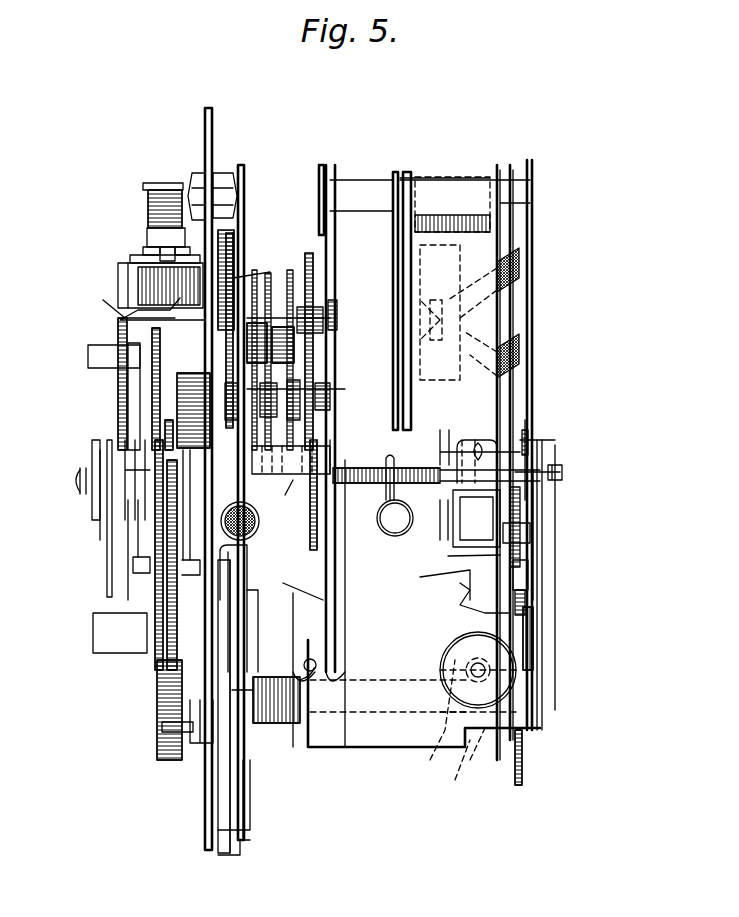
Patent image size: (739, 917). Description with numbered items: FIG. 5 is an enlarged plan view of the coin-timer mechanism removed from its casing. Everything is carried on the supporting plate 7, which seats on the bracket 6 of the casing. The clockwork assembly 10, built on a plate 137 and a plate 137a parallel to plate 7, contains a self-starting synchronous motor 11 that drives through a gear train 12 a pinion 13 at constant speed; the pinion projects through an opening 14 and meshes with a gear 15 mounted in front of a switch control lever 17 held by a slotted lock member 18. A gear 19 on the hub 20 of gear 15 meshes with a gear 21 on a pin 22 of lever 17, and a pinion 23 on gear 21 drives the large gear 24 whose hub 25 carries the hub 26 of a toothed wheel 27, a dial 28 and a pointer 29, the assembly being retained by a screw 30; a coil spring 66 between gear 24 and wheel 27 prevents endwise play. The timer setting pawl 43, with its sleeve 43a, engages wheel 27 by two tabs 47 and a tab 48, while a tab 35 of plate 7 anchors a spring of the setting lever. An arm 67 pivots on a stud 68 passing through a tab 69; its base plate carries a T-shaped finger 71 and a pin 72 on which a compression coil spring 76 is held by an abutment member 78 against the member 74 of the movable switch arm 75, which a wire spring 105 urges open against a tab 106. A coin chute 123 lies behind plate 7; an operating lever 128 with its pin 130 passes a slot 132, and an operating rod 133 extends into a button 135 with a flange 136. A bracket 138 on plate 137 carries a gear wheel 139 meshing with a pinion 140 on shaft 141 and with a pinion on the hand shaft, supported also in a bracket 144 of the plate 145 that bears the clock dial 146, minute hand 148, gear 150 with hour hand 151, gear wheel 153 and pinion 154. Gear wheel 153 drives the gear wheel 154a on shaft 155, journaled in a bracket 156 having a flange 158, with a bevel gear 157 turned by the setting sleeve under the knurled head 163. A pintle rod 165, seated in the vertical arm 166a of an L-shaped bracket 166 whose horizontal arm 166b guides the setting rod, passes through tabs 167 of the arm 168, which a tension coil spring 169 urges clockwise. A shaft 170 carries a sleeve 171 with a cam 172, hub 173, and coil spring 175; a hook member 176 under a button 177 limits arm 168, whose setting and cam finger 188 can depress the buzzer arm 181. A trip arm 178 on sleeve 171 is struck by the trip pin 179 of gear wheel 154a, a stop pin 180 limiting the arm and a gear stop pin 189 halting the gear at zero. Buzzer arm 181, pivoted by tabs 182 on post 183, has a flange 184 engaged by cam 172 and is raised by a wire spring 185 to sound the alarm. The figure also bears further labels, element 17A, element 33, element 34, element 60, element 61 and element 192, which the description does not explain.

The bracket 6 is at (297, 790).
The supporting plate 7 is at (204, 125).
The clockwork assembly 10 is at (375, 168).
The self-starting synchronous motor 11 is at (338, 190).
The gear train 12 is at (171, 870).
The pinion 13 is at (337, 870).
The opening 14 is at (213, 368).
The gear 15 is at (193, 517).
The switch control lever 17 is at (175, 705).
The pawl 17A is at (480, 443).
The slotted lock member 18 is at (247, 556).
The gear 19 is at (170, 420).
The hub 20 is at (250, 505).
The gear 21 is at (170, 690).
The pin 22 is at (165, 675).
The pinion 23 is at (140, 660).
The gear 24 is at (129, 299).
The hub 25 is at (98, 500).
The hub 26 is at (112, 440).
The toothed wheel 27 is at (118, 382).
The dial 28 is at (107, 548).
The pointer 29 is at (80, 475).
The screw 30 is at (80, 485).
The shaft 33 is at (175, 765).
The bracket 34 is at (200, 745).
The tab 35 is at (165, 735).
The timer setting pawl 43 is at (140, 690).
The sleeve 43a is at (150, 590).
The tabs 47 is at (100, 640).
The tab 48 is at (88, 352).
The bracket 60 is at (133, 562).
The rod 61 is at (128, 580).
The coil spring 66 is at (92, 462).
The arm 67 is at (248, 330).
The stud 68 is at (118, 275).
The tab 69 is at (130, 259).
The T-shaped finger 71 is at (150, 235).
The pin 72 is at (168, 183).
The member 74 is at (143, 250).
The movable switch arm 75 is at (238, 225).
The compression coil spring 76 is at (150, 215).
The abutment member 78 is at (152, 190).
The wire spring 105 is at (162, 308).
The tab 106 is at (272, 270).
The coin chute 123 is at (200, 743).
The operating lever 128 is at (300, 492).
The pin 130 is at (248, 652).
The slot 132 is at (247, 598).
The operating rod 133 is at (258, 515).
The button 135 is at (285, 583).
The flange 136 is at (255, 526).
The plate 137 is at (245, 168).
The plate 137a is at (337, 268).
The bracket 138 is at (215, 595).
The gear wheel 139 is at (238, 585).
The pinion 140 is at (313, 370).
The shaft 141 is at (300, 392).
The bracket 144 is at (562, 472).
The plate 145 is at (530, 335).
The clock dial 146 is at (533, 360).
The minute hand 148 is at (555, 575).
The gear 150 is at (528, 420).
The hour hand 151 is at (520, 500).
The gear wheel 153 is at (520, 488).
The pinion 154 is at (540, 515).
The gear wheel 154a is at (525, 600).
The shaft 155 is at (440, 662).
The bracket 156 is at (415, 600).
The bevel gear 157 is at (488, 744).
The flange 158 is at (462, 764).
The knurled head 163 is at (455, 645).
The pintle rod 165 is at (375, 720).
The L-shaped bracket 166 is at (533, 632).
The vertical arm 166a is at (530, 605).
The horizontal arm 166b is at (533, 680).
The tabs 167 is at (338, 700).
The arm 168 is at (355, 630).
The tension coil spring 169 is at (270, 725).
The shaft 170 is at (355, 445).
The sleeve 171 is at (530, 440).
The cam 172 is at (460, 520).
The hub 173 is at (383, 530).
The coil spring 175 is at (388, 490).
The hook member 176 is at (415, 445).
The button 177 is at (432, 585).
The trip arm 178 is at (456, 552).
The trip pin 179 is at (460, 585).
The stop pin 180 is at (530, 533).
The buzzer arm 181 is at (320, 400).
The tabs 182 is at (530, 215).
The post 183 is at (355, 222).
The flange 184 is at (476, 527).
The wire spring 185 is at (445, 204).
The setting and cam finger 188 is at (462, 438).
The gear stop pin 189 is at (528, 562).
The bar 192 is at (291, 457).